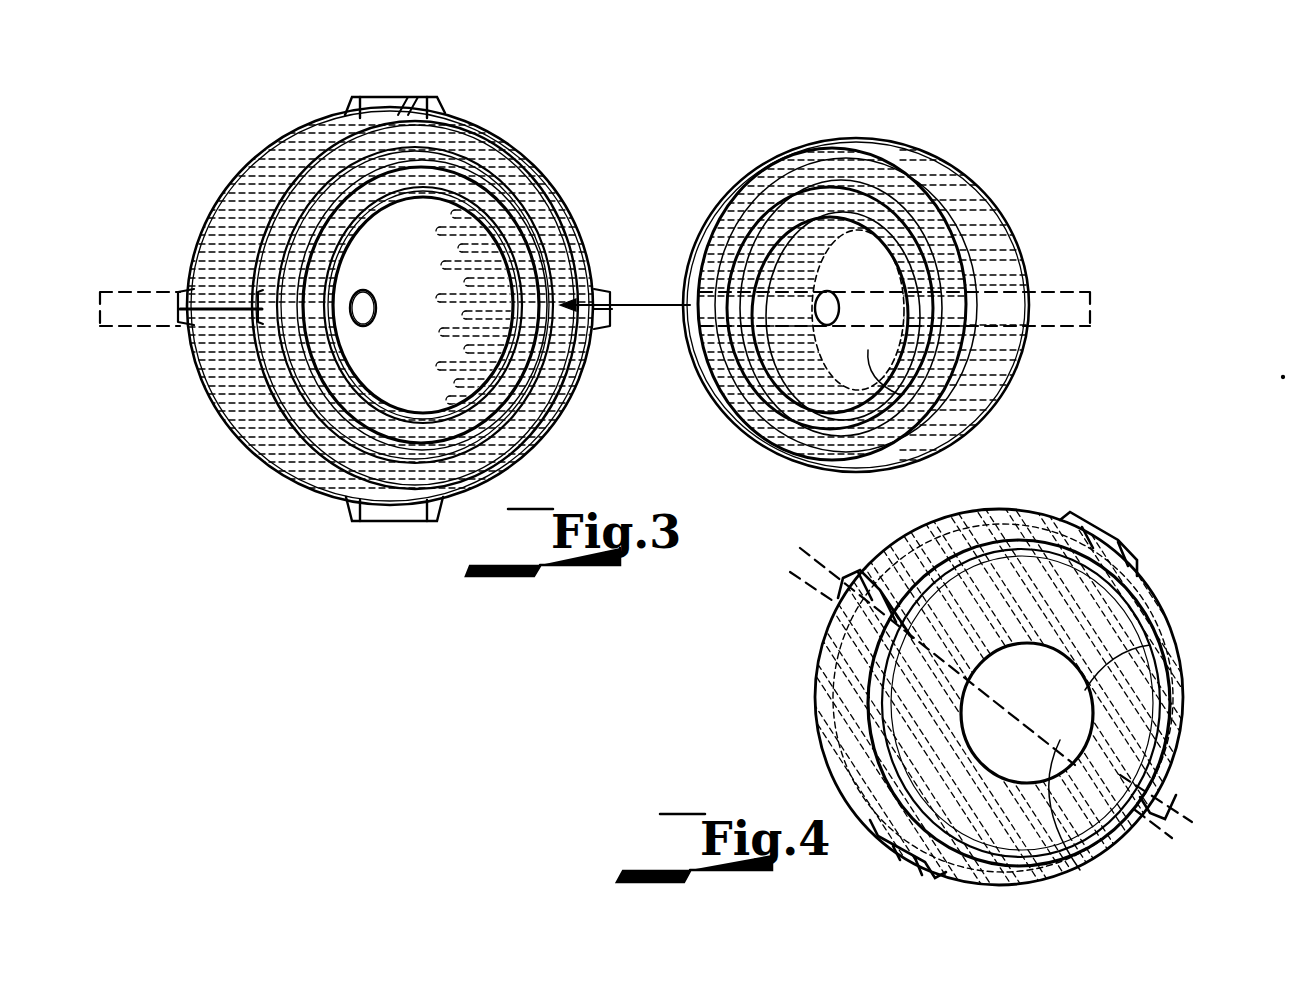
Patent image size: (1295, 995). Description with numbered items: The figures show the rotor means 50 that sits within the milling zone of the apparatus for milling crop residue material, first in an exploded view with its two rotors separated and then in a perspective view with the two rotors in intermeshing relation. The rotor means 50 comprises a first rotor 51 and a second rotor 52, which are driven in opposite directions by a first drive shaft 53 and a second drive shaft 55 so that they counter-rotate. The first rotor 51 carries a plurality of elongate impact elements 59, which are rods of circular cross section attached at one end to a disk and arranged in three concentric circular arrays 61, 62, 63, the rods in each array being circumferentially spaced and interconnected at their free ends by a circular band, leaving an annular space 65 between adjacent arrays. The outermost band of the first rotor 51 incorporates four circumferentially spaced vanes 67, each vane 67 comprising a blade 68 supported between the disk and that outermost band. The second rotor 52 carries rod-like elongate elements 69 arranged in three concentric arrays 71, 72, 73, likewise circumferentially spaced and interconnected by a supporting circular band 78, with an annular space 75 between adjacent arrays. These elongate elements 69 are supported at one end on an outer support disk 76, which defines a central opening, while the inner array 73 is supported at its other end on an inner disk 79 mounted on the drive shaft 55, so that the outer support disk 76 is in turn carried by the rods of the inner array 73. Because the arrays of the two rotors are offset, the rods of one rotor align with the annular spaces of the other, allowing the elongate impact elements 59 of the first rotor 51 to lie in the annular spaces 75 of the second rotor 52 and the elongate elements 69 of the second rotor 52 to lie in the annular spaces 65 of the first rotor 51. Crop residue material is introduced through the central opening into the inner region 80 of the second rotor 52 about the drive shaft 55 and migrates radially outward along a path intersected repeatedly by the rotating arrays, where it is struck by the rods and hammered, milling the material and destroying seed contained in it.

In FIG. 4, the rotor means 50 is at (803, 690).
In FIG. 3, the first rotor 51 is at (204, 202).
In FIG. 4, the first rotor 51 is at (1010, 522).
In FIG. 3, the second rotor 52 is at (737, 167).
In FIG. 4, the second rotor 52 is at (1120, 732).
In FIG. 3, the first drive shaft 53 is at (146, 292).
In FIG. 4, the first drive shaft 53 is at (812, 586).
In FIG. 3, the second drive shaft 55 is at (1062, 295).
In FIG. 4, the second drive shaft 55 is at (1182, 812).
In FIG. 3, the elongate impact elements 59 is at (225, 378).
In FIG. 3, the first array 61 is at (478, 132).
In FIG. 3, the second array 62 is at (503, 187).
In FIG. 3, the third array 63 is at (502, 217).
In FIG. 3, the annular space 65 is at (492, 172).
In FIG. 3, the vanes 67 is at (390, 98).
In FIG. 4, the vanes 67 is at (1090, 535).
In FIG. 3, the blade 68 is at (412, 100).
In FIG. 3, the elongate elements 69 is at (1000, 245).
In FIG. 3, the first array 71 is at (735, 420).
In FIG. 3, the second array 72 is at (790, 402).
In FIG. 3, the inner array 73 is at (838, 410).
In FIG. 3, the annular space 75 is at (714, 392).
In FIG. 4, the outer support disk 76 is at (1130, 640).
In FIG. 3, the supporting circular band 78 is at (888, 152).
In FIG. 4, the inner disk 79 is at (1050, 735).
In FIG. 3, the inner region 80 is at (870, 345).
In FIG. 4, the inner region 80 is at (1075, 690).